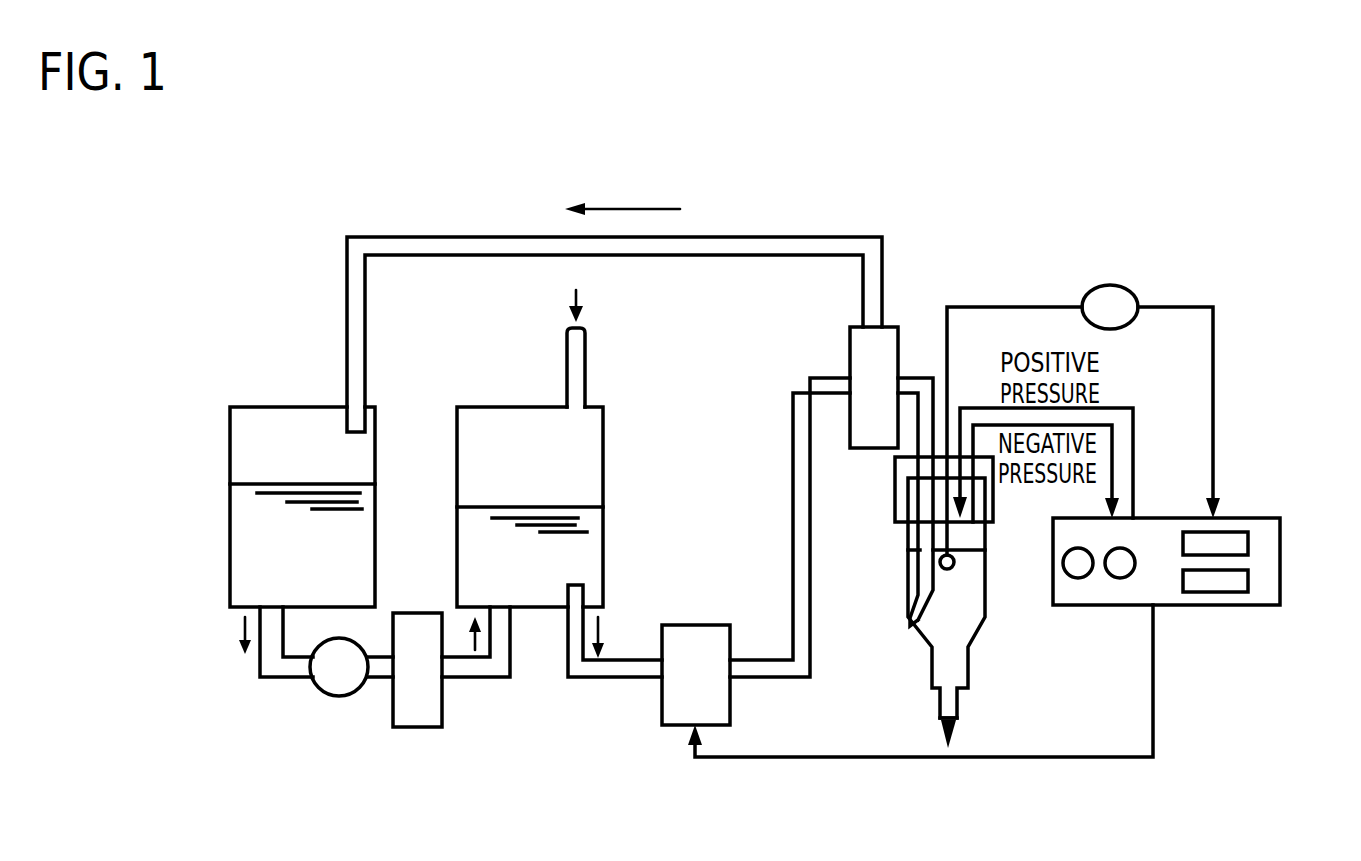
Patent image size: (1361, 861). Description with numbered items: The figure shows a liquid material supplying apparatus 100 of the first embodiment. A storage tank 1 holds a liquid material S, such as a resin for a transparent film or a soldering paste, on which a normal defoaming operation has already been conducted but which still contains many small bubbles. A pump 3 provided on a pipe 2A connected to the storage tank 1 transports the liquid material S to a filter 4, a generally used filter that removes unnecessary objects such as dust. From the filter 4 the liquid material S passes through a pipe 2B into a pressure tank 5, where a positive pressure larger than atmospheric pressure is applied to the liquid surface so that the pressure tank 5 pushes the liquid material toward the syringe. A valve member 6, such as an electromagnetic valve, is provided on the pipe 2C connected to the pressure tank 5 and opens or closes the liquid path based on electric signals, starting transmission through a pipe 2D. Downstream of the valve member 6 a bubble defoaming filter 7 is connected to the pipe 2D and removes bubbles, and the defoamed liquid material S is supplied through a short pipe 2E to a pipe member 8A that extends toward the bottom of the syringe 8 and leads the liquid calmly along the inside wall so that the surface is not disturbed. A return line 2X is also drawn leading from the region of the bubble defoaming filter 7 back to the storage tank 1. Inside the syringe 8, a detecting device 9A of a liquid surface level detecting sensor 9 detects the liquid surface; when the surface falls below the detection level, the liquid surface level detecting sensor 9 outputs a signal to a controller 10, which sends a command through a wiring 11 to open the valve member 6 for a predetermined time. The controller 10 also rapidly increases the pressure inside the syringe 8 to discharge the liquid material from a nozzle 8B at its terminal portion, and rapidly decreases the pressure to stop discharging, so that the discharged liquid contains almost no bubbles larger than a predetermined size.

The liquid material supplying apparatus 100 is at (1052, 151).
The storage tank 1 is at (267, 420).
The pipe 2A is at (275, 662).
The pipe 2B is at (468, 665).
The pipe 2C is at (622, 678).
The pipe 2D is at (810, 650).
The pipe 2E is at (913, 375).
The return pipe to first tank 2X is at (797, 245).
The pump 3 is at (338, 675).
The filter 4 is at (413, 712).
The pressure tank 5 is at (585, 453).
The valve member 6 is at (692, 643).
The bubble defoaming filter 7 is at (868, 362).
The syringe 8 is at (987, 595).
The pipe member 8A is at (920, 517).
The nozzle 8B is at (957, 704).
The liquid surface level detecting sensor 9 is at (1112, 297).
The detecting device 9A is at (955, 560).
The controller 10 is at (1263, 565).
The wiring 11 is at (881, 757).
The liquid material S is at (245, 562).